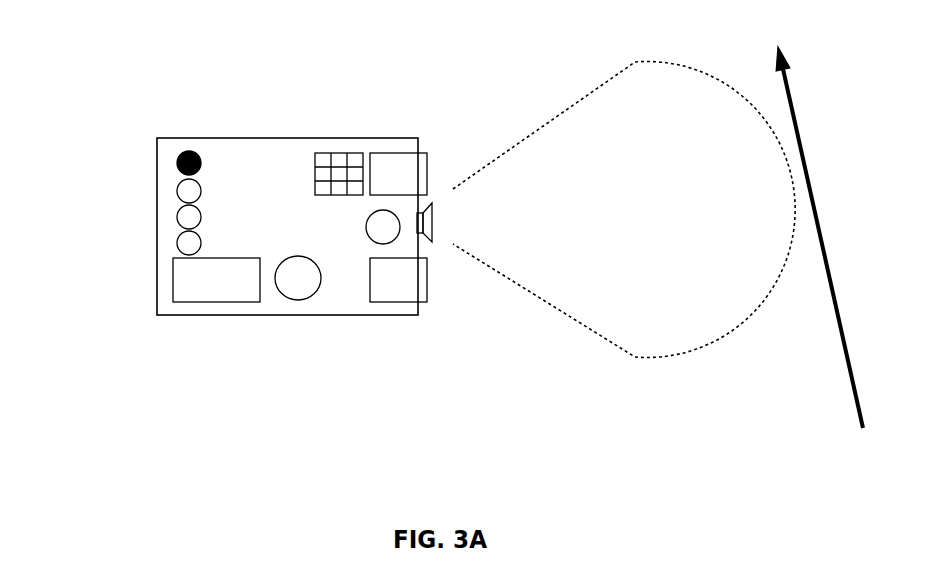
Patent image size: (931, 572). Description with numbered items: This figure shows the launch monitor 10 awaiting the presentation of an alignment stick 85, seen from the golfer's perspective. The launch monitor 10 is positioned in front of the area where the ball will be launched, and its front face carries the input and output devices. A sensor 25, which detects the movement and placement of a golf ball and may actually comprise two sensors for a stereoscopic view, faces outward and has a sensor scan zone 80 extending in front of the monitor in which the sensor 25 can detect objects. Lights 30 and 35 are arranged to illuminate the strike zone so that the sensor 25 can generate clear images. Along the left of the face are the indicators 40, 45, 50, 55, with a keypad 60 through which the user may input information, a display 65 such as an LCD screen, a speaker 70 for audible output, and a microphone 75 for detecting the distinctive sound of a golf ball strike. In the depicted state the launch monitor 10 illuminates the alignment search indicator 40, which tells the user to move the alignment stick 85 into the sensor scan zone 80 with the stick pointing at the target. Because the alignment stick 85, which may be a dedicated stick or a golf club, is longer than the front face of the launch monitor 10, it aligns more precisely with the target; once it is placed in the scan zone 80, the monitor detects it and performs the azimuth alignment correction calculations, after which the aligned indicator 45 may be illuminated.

The launch monitor 10 is at (157, 103).
The sensor 25 is at (430, 242).
The light 30 is at (397, 153).
The light 35 is at (398, 302).
The alignment search indicator 40 is at (180, 156).
The aligned indicator 45 is at (177, 189).
The indicator 50 is at (177, 216).
The indicator 55 is at (177, 243).
The keypad 60 is at (330, 153).
The display 65 is at (172, 302).
The speaker 70 is at (293, 299).
The microphone 75 is at (367, 232).
The sensor scan zone 80 is at (618, 345).
The alignment stick 85 is at (847, 365).